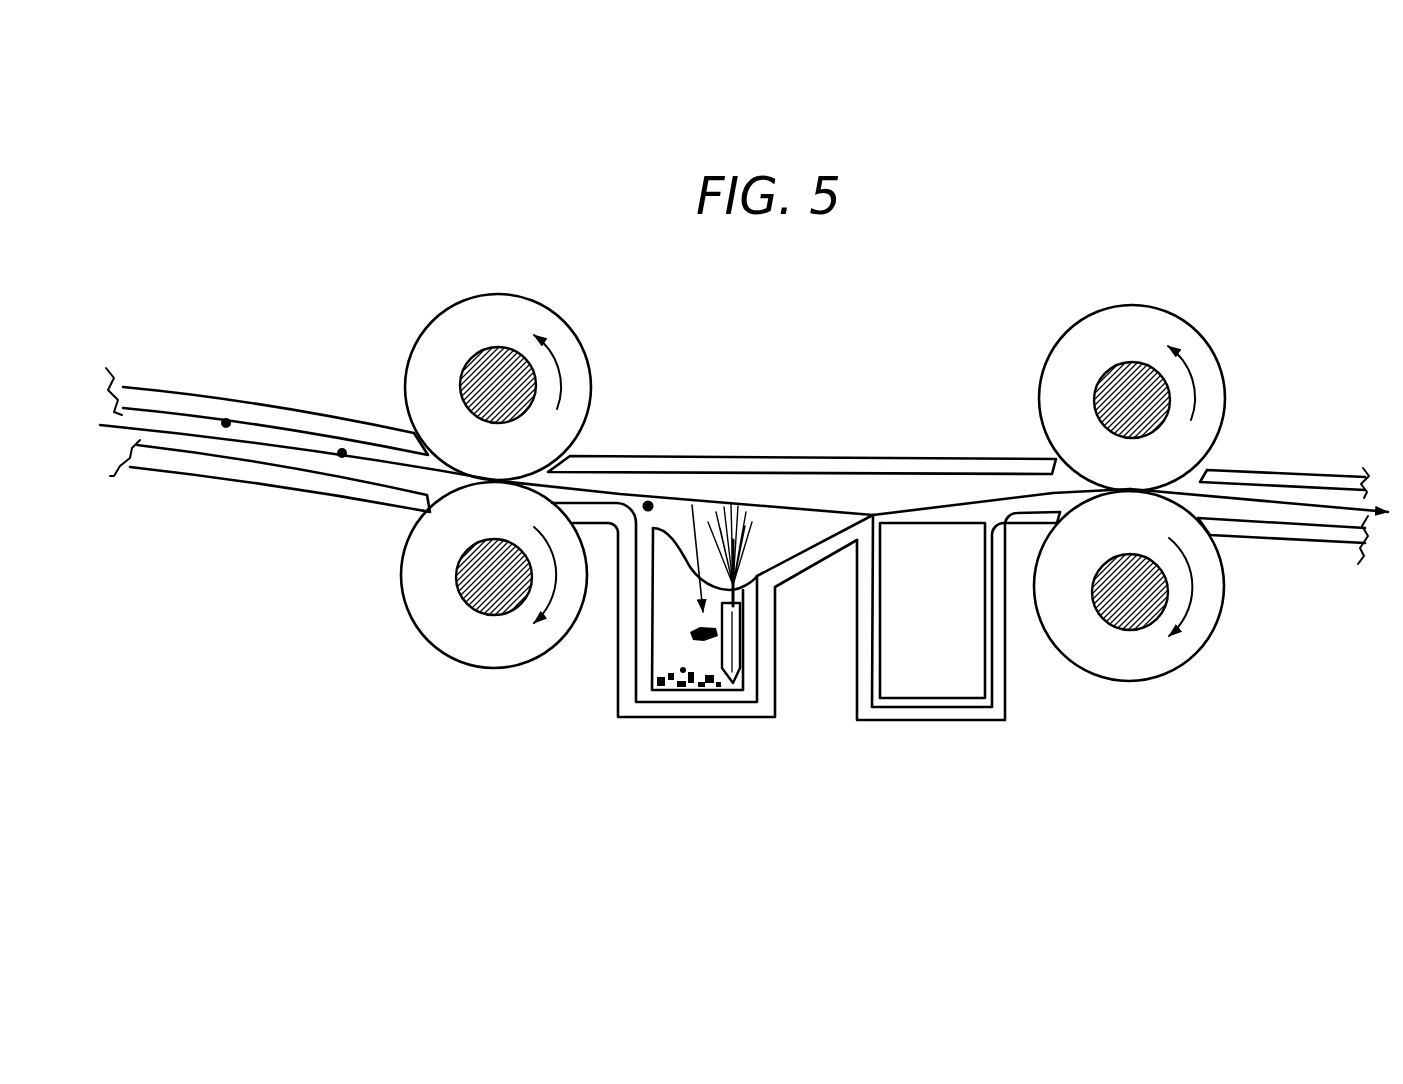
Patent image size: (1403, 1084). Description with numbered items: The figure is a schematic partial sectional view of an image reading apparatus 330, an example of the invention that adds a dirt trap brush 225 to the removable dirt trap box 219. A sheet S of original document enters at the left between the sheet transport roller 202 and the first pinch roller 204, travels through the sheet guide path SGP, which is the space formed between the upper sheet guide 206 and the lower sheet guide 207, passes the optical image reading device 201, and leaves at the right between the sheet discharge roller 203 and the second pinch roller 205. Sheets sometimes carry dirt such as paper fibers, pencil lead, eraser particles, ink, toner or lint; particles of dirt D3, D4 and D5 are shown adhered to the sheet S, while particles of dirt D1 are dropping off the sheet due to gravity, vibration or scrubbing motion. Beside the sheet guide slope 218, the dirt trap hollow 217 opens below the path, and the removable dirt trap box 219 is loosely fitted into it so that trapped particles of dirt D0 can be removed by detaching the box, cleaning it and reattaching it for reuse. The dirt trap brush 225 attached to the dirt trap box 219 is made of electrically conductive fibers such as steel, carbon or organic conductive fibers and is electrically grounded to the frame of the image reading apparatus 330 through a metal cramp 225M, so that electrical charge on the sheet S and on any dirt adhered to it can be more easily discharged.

The optical image reading device 201 is at (932, 672).
The sheet transport roller 202 is at (453, 659).
The sheet discharge roller 203 is at (1217, 629).
The first pinch roller 204 is at (563, 313).
The second pinch roller 205 is at (1172, 312).
The upper sheet guide 206 is at (922, 457).
The lower sheet guide 207 is at (1268, 542).
The dirt trap hollow 217 is at (648, 688).
The sheet guide slope 218 is at (822, 513).
The removable dirt trap box 219 is at (617, 650).
The dirt trap brush 225 is at (744, 530).
The metal cramp 225M is at (735, 690).
The image reading apparatus 330 is at (883, 297).
The particles of dirt D0 is at (718, 690).
The particles of dirt D1 is at (693, 654).
The particles of dirt D3 is at (649, 502).
The particles of dirt D4 is at (343, 458).
The particles of dirt D5 is at (228, 418).
The sheet S is at (180, 432).
The sheet guide path SGP is at (257, 443).